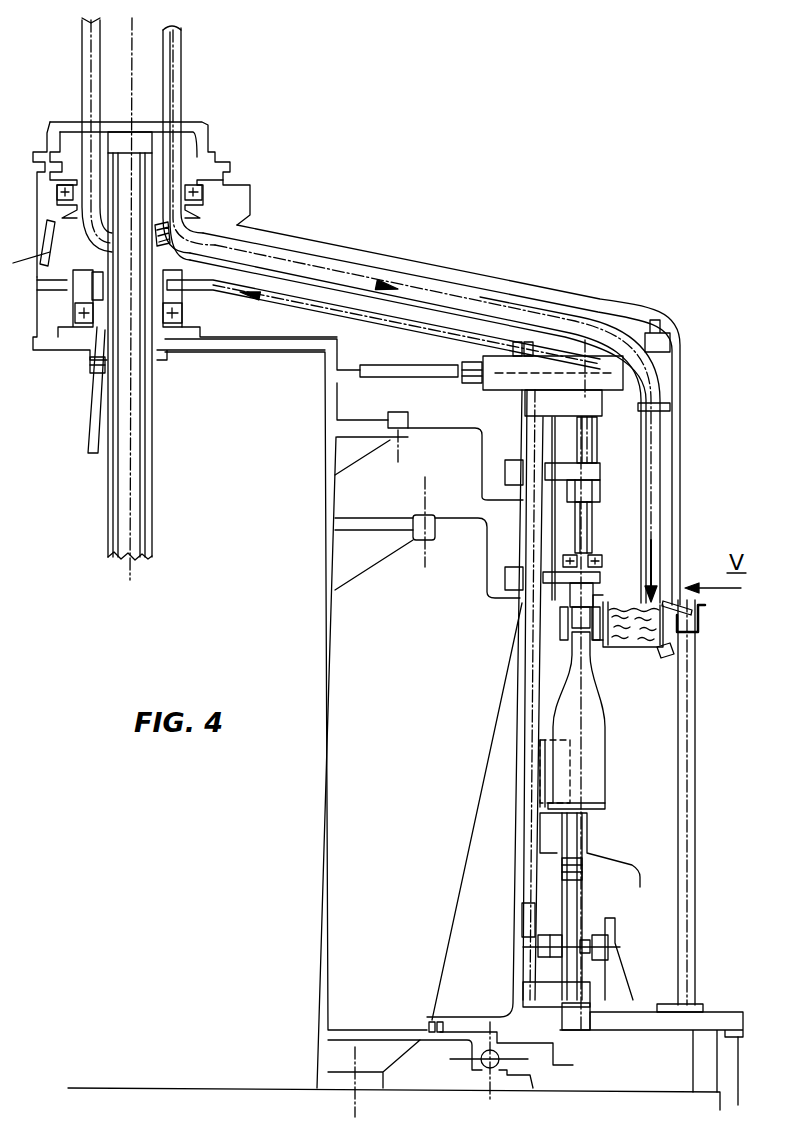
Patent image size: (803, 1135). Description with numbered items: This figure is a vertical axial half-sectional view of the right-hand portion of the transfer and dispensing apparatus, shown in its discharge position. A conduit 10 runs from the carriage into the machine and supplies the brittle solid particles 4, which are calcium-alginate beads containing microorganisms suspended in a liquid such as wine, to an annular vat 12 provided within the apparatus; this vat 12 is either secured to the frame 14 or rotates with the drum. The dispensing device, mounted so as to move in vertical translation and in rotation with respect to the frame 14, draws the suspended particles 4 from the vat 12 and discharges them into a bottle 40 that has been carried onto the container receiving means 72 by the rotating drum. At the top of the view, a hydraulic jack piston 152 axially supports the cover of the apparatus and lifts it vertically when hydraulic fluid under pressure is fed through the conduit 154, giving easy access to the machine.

The brittle solid particles 4 is at (628, 637).
The conduit 10 is at (369, 280).
The annular vat 12 is at (643, 648).
The frame 14 is at (322, 838).
The bottle 40 is at (590, 777).
The container receiving means 72 is at (545, 884).
The hydraulic jack piston 152 is at (133, 521).
The conduit 154 is at (172, 112).